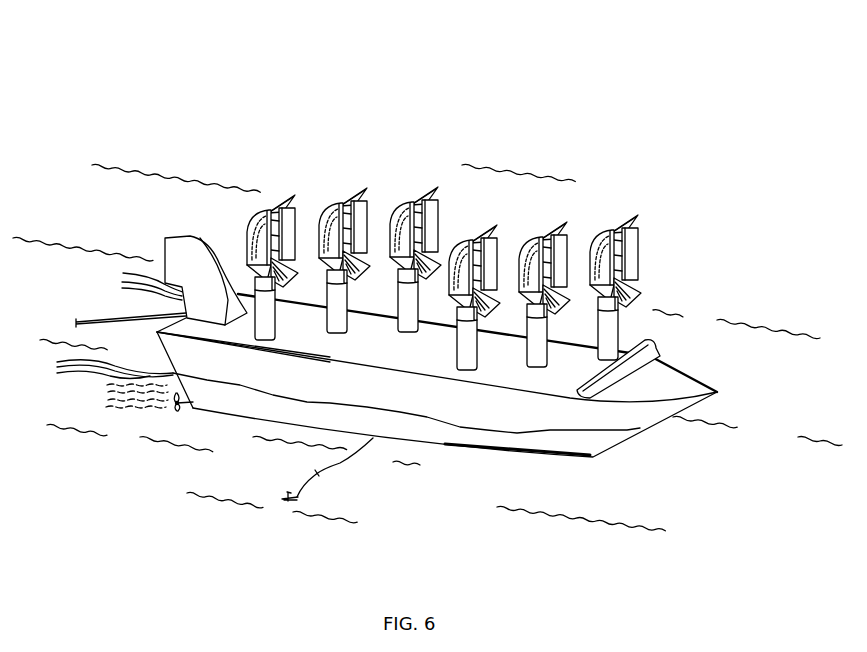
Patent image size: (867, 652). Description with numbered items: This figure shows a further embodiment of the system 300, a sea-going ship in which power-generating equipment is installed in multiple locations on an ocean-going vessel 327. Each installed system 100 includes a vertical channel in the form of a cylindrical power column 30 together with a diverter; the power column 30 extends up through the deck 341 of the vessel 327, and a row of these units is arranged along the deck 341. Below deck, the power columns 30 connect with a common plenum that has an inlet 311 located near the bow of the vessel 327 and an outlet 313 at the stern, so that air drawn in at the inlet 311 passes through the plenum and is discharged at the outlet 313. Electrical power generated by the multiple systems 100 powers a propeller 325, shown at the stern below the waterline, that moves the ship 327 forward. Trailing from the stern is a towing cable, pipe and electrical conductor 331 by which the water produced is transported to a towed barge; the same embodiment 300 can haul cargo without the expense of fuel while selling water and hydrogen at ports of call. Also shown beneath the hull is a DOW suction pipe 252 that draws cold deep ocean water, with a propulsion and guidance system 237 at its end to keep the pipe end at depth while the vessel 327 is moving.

The system 300 is at (368, 98).
The outlet 313 is at (185, 236).
The towing cable/pipe/electrical conductor 331 is at (128, 315).
The deck 341 is at (358, 317).
The cylindrical power column 30 is at (452, 343).
The system 100 is at (653, 243).
The inlet 311 is at (637, 347).
The propeller 325 is at (178, 412).
The DOW suction pipe 252 is at (340, 463).
The propulsion and guidance system 237 is at (286, 511).
The ocean-going vessel 327 is at (464, 463).